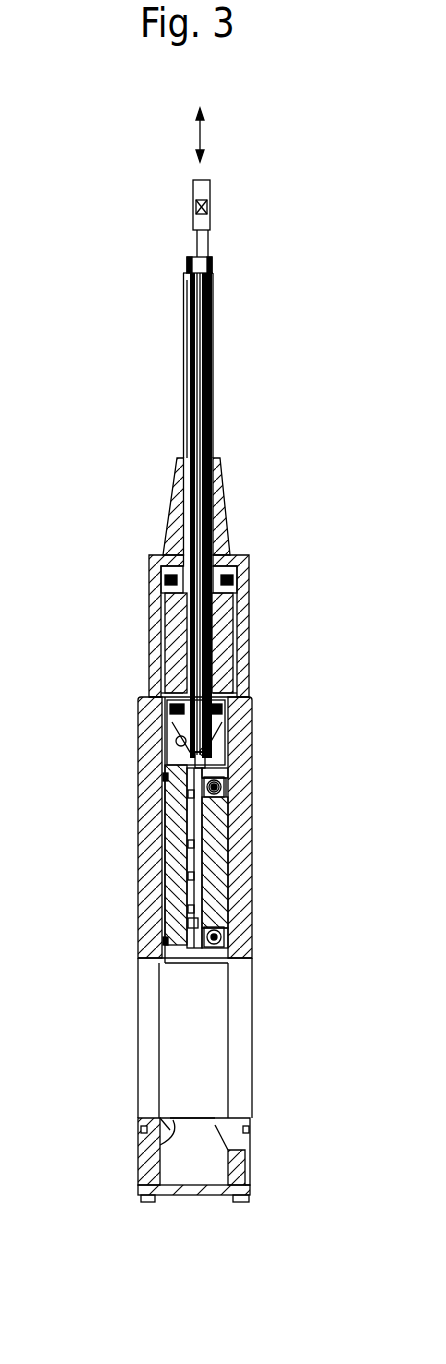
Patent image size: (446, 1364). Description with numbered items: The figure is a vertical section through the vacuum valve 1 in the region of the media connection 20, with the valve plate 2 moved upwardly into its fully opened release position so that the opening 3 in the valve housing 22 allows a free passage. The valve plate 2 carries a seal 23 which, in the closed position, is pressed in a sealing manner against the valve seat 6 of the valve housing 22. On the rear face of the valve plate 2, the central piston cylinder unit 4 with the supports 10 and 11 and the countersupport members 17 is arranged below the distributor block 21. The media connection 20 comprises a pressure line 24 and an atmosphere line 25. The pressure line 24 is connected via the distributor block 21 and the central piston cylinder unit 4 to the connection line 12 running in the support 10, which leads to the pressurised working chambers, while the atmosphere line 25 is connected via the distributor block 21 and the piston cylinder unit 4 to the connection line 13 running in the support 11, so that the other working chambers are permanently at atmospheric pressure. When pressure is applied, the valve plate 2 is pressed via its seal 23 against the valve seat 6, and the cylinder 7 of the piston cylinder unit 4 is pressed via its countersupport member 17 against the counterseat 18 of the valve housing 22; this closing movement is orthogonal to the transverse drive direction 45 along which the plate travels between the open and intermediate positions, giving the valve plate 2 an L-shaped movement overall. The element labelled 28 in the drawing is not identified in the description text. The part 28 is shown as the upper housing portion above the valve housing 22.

The vacuum valve 1 is at (248, 357).
The valve plate 2 is at (172, 853).
The opening 3 is at (179, 1074).
The central piston cylinder unit 4 is at (208, 863).
The valve seat 6 is at (167, 963).
The cylinder 7 is at (222, 825).
The support 10 is at (225, 783).
The support 11 is at (228, 925).
The connection line 12 is at (218, 790).
The connection line 13 is at (224, 940).
The countersupport member 17 is at (229, 774).
The counterseat 18 is at (228, 958).
The media connection 20 is at (211, 413).
The distributor block 21 is at (218, 735).
The valve housing 22 is at (224, 780).
The seal 23 is at (165, 777).
The pressure line 24 is at (208, 308).
The atmosphere line 25 is at (193, 328).
The upper housing 28 is at (150, 688).
The transverse drive direction 45 is at (201, 135).